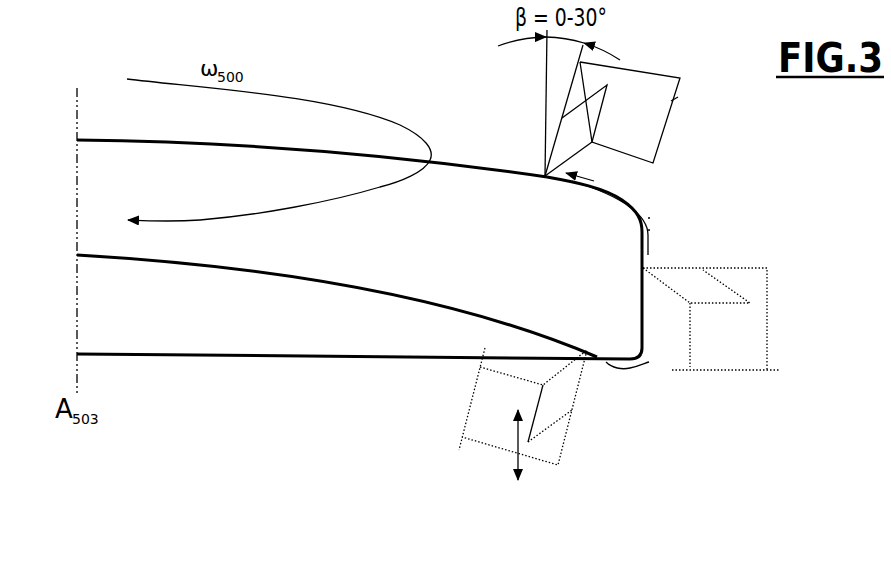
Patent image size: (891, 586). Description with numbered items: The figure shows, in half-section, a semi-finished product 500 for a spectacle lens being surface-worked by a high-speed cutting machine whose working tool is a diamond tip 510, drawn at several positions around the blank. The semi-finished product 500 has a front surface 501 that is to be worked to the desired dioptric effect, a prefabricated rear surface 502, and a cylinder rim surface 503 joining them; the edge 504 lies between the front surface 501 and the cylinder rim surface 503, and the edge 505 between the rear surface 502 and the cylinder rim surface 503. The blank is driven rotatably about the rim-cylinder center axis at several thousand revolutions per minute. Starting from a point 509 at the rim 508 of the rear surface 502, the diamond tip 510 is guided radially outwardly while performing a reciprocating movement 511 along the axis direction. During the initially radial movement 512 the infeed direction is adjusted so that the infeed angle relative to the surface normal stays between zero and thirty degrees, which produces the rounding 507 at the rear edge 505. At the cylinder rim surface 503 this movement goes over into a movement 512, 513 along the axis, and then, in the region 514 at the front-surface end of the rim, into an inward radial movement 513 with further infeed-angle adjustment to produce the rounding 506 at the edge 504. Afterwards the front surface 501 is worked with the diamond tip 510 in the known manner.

The semi-finished product 500 is at (425, 124).
The front surface 501 is at (303, 148).
The rear surface 502 is at (370, 291).
The cylinder rim surface 503 is at (646, 265).
The edge 504 is at (654, 199).
The edge 505 is at (668, 374).
The rounding 506 is at (648, 218).
The rounding 507 is at (649, 296).
The rim 508 is at (627, 354).
The point 509 is at (573, 358).
The diamond tip 510 is at (587, 126).
The reciprocating movement 511 is at (516, 460).
The initially radial movement 512 is at (648, 352).
The inward radial movement 513 is at (649, 230).
The region 514 is at (646, 199).